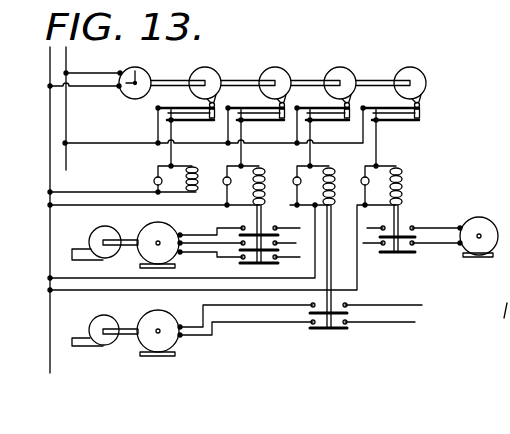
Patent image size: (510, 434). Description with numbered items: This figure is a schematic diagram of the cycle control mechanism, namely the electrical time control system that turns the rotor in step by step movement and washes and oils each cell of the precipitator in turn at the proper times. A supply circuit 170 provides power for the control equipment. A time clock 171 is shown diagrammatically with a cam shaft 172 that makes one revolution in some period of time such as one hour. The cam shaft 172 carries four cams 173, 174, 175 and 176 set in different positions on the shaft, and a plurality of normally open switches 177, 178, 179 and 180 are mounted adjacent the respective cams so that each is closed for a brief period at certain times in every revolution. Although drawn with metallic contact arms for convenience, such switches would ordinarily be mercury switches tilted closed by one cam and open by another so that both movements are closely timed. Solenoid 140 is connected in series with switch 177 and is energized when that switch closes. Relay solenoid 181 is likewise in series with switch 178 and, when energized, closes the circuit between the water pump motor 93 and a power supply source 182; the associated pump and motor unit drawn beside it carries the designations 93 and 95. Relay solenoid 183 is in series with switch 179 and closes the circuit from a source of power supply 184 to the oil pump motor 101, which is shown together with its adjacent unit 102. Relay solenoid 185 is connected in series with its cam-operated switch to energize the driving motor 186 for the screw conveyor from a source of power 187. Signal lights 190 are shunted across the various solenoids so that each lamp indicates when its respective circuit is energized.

The supply circuit 170 is at (60, 60).
The time clock 171 is at (134, 67).
The cam shaft 172 is at (238, 80).
The cam 173 is at (209, 68).
The cam 174 is at (290, 60).
The cam 175 is at (344, 58).
The cam 176 is at (413, 67).
The normally open switch 177 is at (213, 120).
The normally open switch 178 is at (284, 120).
The normally open switch 179 is at (352, 120).
The normally open switch 180 is at (424, 120).
The solenoid 140 is at (203, 153).
The relay solenoid 181 is at (272, 158).
The relay solenoid 183 is at (341, 158).
The relay solenoid 185 is at (410, 158).
The signal lights 190 is at (153, 180).
The power supply source 182 is at (293, 247).
The source of power supply 184 is at (416, 318).
The source of power 187 is at (374, 246).
The driving motor 186 is at (479, 217).
The water pump motor 93 is at (93, 234).
The motor 95 is at (141, 235).
The oil pump motor 101 is at (106, 348).
The motor 102 is at (163, 354).